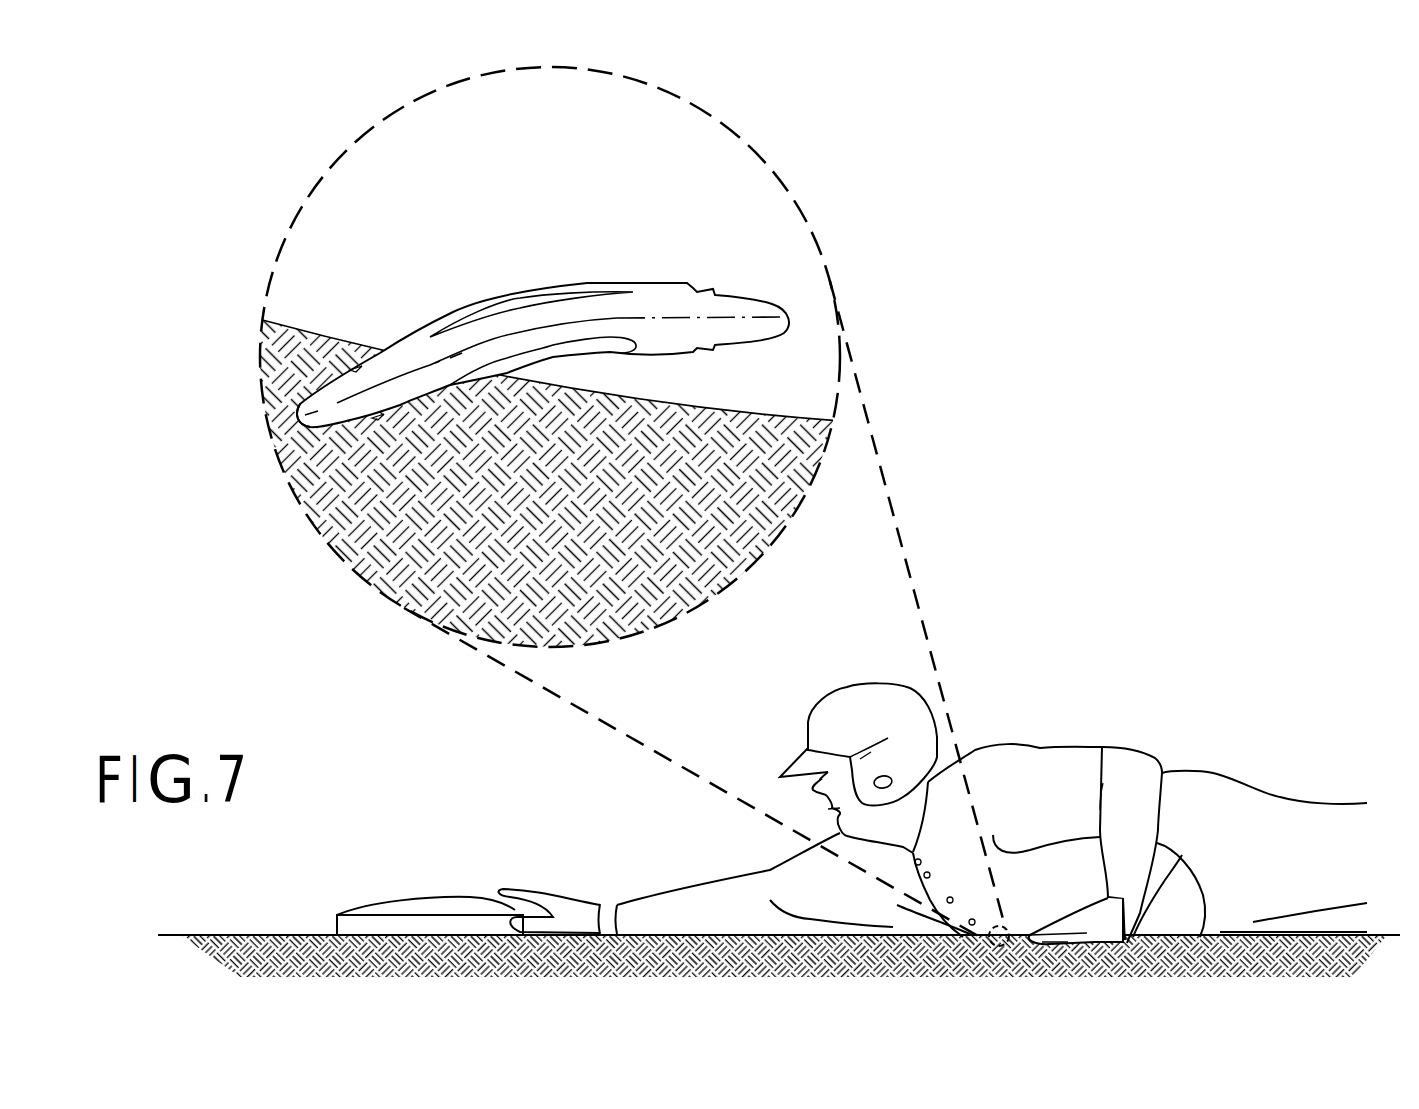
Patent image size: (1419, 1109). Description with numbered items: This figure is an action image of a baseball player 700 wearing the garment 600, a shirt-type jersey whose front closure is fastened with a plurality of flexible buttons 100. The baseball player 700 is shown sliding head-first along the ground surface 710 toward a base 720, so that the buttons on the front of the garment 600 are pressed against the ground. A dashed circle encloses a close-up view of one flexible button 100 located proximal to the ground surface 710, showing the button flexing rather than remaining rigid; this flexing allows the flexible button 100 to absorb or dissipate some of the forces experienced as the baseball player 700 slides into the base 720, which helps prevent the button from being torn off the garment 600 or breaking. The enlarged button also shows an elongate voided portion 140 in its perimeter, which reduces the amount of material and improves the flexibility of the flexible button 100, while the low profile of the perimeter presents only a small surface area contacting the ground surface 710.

The flexible button 100 is at (634, 258).
The voided portion 140 is at (390, 410).
The garment 600 is at (1040, 736).
The baseball player 700 is at (1119, 481).
The ground surface 710 is at (345, 540).
The base 720 is at (407, 905).